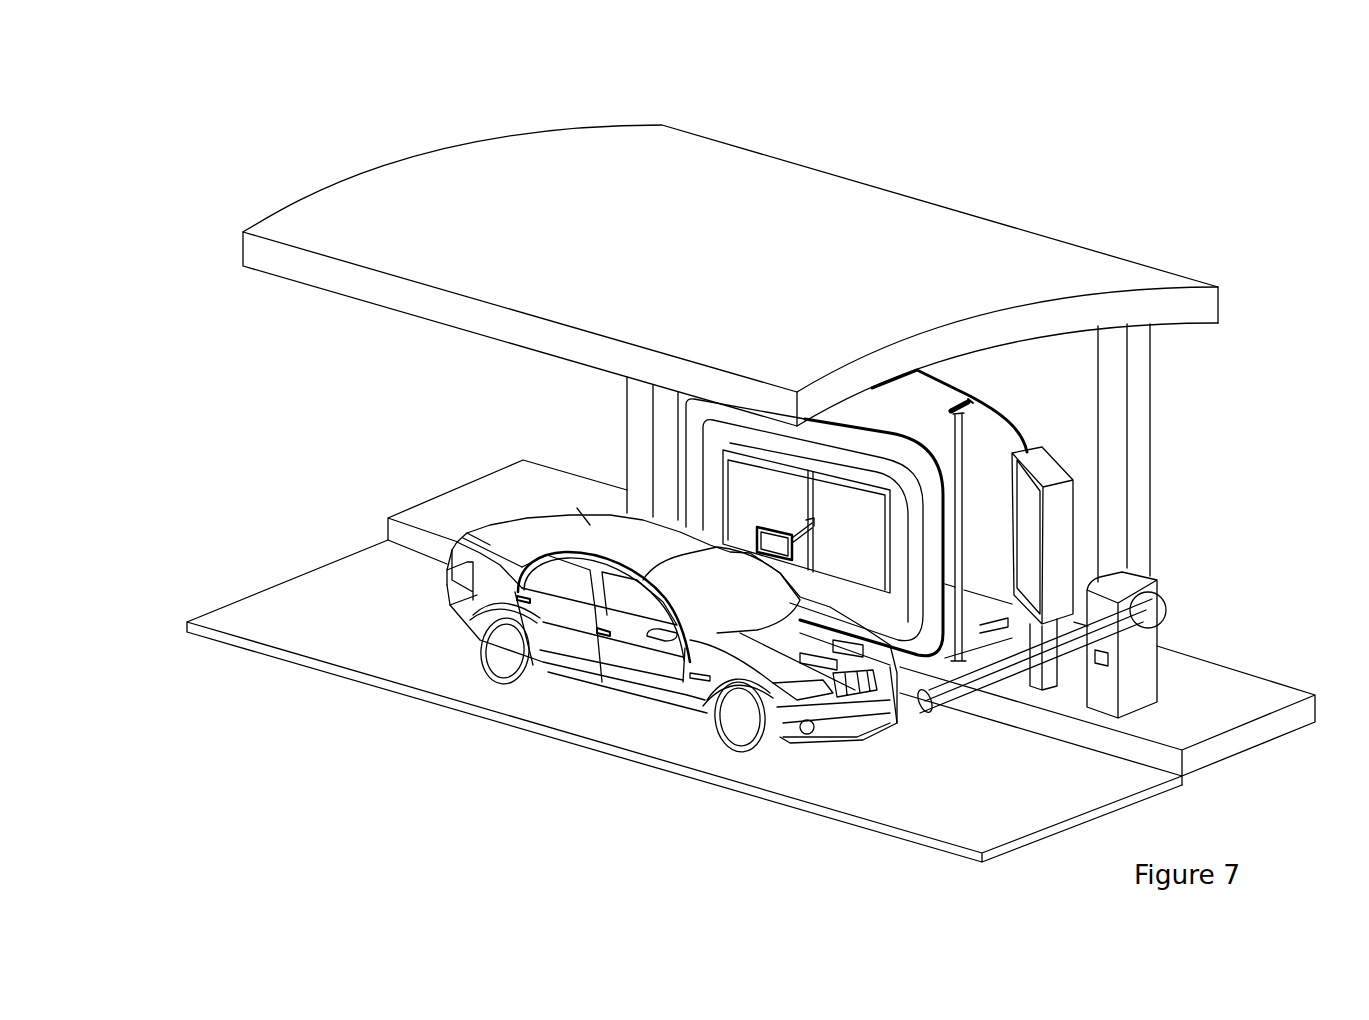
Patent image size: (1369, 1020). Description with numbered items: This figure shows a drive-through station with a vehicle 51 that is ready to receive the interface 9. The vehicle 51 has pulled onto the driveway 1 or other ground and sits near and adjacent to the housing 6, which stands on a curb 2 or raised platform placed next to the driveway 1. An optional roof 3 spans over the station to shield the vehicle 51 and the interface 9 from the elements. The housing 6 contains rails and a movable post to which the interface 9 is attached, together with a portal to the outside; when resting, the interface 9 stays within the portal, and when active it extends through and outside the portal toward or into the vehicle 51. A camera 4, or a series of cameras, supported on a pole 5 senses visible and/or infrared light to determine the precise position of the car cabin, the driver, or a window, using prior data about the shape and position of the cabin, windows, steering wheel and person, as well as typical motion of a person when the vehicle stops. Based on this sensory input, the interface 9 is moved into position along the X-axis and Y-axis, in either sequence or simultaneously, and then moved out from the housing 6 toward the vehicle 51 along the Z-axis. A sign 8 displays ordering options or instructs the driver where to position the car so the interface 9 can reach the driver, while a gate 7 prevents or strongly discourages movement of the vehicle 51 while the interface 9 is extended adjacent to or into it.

The driveway 1 is at (292, 613).
The curb 2 is at (473, 502).
The roof 3 is at (380, 198).
The camera 4 is at (967, 400).
The pole 5 is at (962, 442).
The housing 6 is at (908, 410).
The gate 7 is at (1116, 629).
The sign 8 is at (1062, 505).
The interface 9 is at (777, 535).
The vehicle 51 is at (717, 603).